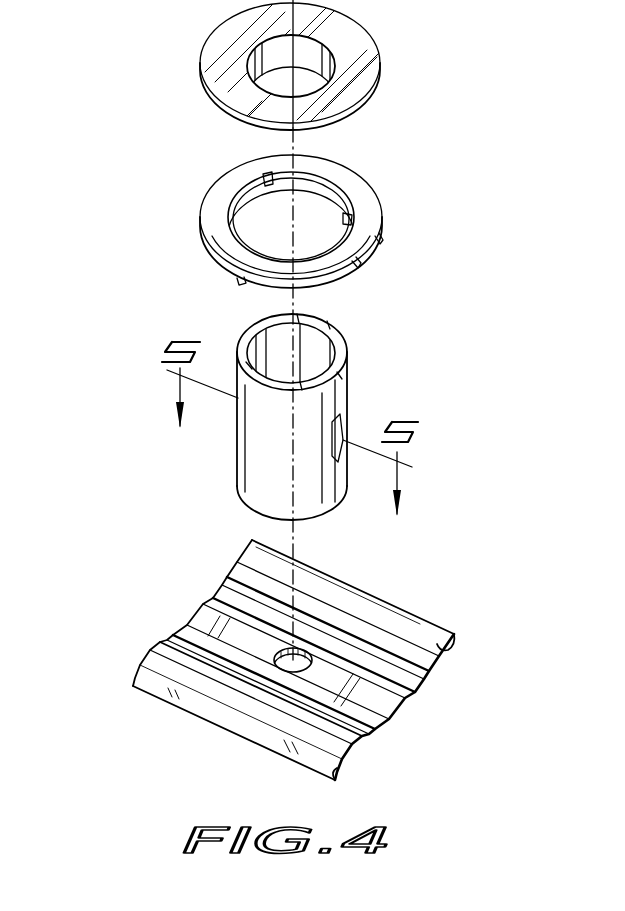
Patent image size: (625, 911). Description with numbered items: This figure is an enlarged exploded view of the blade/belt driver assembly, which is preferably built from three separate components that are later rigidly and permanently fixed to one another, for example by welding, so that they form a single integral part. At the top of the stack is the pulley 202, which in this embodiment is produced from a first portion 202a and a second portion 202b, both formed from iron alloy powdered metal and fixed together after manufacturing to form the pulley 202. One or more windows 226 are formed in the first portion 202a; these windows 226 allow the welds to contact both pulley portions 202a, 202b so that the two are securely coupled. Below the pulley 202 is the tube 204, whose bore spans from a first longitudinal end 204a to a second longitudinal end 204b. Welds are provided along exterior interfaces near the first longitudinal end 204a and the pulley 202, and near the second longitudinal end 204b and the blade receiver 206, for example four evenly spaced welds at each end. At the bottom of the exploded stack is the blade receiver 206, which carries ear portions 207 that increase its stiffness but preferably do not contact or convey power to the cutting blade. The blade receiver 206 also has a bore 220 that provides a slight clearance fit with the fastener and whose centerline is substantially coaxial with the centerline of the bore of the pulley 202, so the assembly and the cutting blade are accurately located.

The pulley 202 is at (170, 0).
The first portion 202a is at (330, 209).
The second portion 202b is at (377, 62).
The windows 226 is at (262, 176).
The tube 204 is at (284, 424).
The first longitudinal end 204a is at (332, 345).
The second longitudinal end 204b is at (256, 508).
The blade receiver 206 is at (327, 663).
The ear portions 207 is at (455, 640).
The bore 220 is at (277, 648).